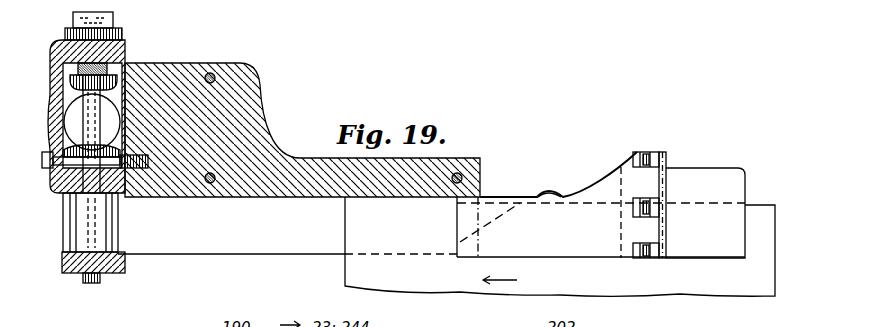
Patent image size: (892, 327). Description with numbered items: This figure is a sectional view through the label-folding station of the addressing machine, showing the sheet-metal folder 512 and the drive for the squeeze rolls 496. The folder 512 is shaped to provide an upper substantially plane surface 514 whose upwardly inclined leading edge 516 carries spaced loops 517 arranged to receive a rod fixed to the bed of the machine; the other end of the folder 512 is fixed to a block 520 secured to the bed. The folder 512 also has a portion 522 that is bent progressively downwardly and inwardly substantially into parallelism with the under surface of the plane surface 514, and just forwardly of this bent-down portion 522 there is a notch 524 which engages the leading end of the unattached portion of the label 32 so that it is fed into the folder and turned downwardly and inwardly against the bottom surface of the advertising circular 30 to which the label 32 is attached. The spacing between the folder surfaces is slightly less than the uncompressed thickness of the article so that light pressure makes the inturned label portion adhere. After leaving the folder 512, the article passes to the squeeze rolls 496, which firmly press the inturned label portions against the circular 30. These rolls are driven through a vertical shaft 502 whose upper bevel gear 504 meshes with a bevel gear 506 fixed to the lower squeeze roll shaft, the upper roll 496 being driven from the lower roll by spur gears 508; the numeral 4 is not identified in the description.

The spur gears 508 is at (66, 34).
The bevel gear 506 is at (118, 72).
The vertical shaft 502 is at (95, 105).
The bevel gear 504 is at (61, 92).
The squeeze rolls 496 is at (88, 219).
The block 520 is at (438, 165).
The notch 524 is at (562, 190).
The upwardly inclined leading edge 516 is at (666, 170).
The label 32 is at (723, 168).
The advertising circular 30 is at (352, 230).
The bed 4 is at (292, 281).
The bent-down portion 522 is at (488, 224).
The spaced loops 517 is at (642, 167).
The folder 512 is at (580, 258).
The upper substantially plane surface 514 is at (558, 242).